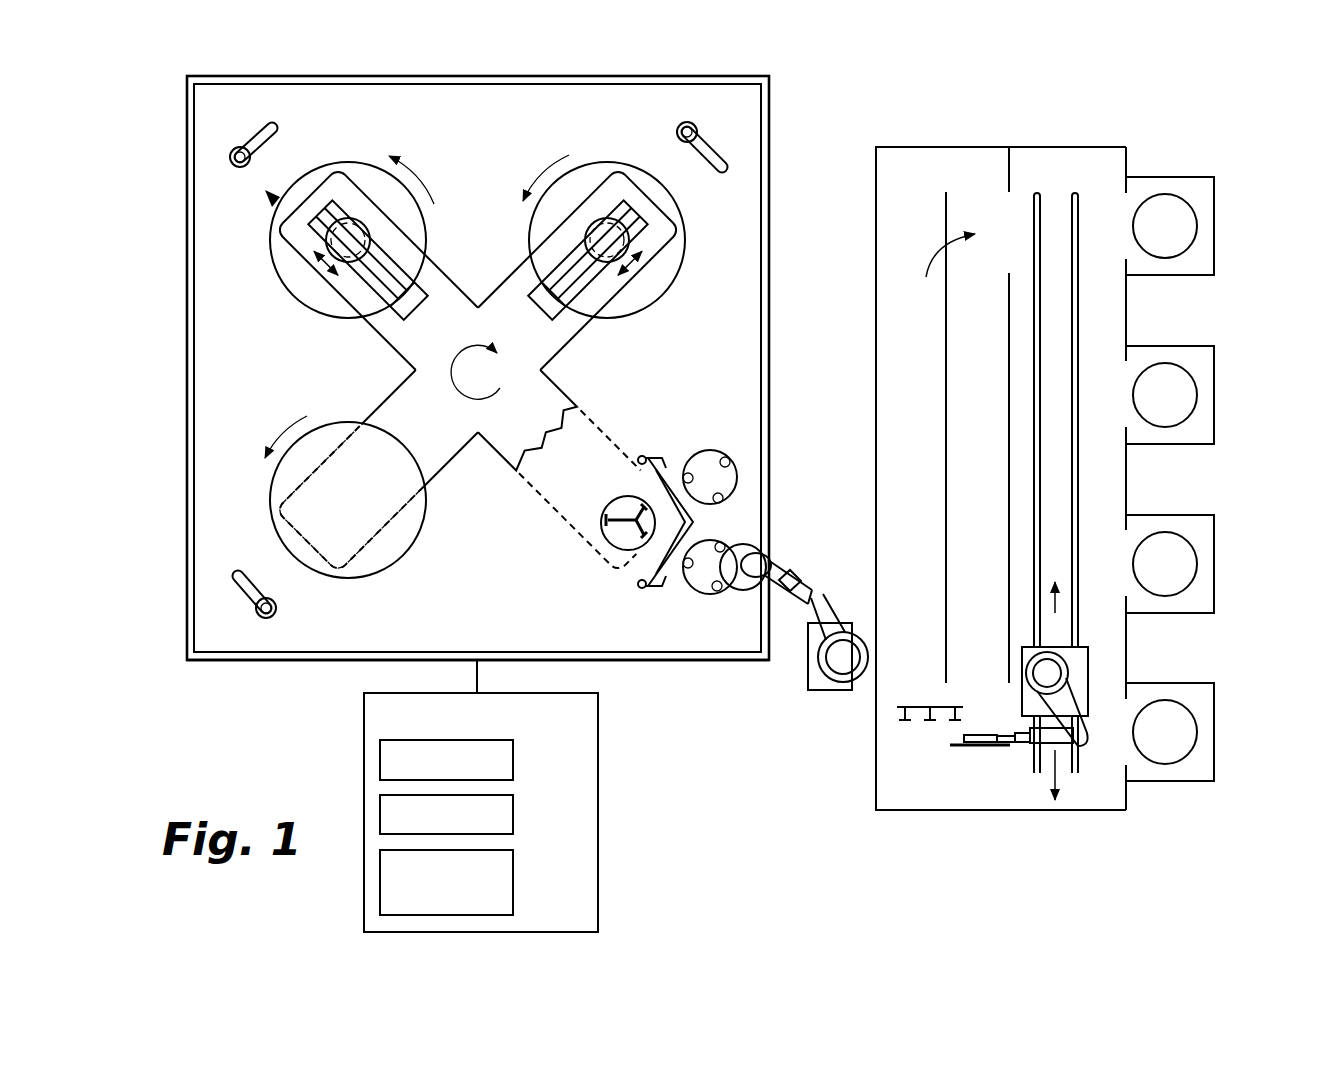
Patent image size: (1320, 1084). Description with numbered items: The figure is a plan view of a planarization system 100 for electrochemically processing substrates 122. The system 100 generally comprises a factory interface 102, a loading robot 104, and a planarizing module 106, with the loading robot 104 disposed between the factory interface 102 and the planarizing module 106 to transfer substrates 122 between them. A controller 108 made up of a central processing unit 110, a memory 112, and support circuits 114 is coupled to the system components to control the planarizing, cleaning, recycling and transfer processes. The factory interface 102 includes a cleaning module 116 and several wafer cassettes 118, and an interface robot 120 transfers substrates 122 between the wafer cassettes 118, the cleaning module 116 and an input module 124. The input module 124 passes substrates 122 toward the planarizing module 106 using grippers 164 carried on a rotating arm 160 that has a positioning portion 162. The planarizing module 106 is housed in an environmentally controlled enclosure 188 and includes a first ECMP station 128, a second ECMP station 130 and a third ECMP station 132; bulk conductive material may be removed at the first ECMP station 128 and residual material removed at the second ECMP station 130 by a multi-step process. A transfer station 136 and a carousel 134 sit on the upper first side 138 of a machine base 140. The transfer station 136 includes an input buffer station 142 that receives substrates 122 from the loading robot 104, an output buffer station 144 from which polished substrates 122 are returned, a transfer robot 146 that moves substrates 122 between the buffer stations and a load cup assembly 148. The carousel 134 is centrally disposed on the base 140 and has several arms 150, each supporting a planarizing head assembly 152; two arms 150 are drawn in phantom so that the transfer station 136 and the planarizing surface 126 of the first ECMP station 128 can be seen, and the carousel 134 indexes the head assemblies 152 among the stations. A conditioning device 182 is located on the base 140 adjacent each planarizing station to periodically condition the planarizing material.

The planarization system 100 is at (240, 728).
The factory interface 102 is at (843, 800).
The loading robot 104 is at (818, 692).
The planarizing module 106 is at (227, 655).
The controller 108 is at (598, 829).
The central processing unit (CPU) 110 is at (513, 760).
The memory 112 is at (513, 815).
The support circuits 114 is at (513, 880).
The cleaning module 116 is at (903, 312).
The wafer cassettes 118 is at (1218, 254).
The interface robot 120 is at (1086, 668).
The substrates 122 is at (1185, 226).
The input module 124 is at (915, 703).
The planarizing surface 126 is at (375, 560).
The first ECMP station 128 is at (420, 530).
The second ECMP station 130 is at (296, 302).
The third ECMP station 132 is at (664, 302).
The carousel 134 is at (521, 328).
The transfer station 136 is at (528, 600).
The first side 138 is at (192, 620).
The machine base 140 is at (195, 410).
The input buffer station 142 is at (705, 580).
The output buffer station 144 is at (705, 455).
The transfer robot 146 is at (690, 520).
The load cup assembly 148 is at (616, 542).
The arms 150 is at (386, 326).
The planarizing head assembly 152 is at (352, 243).
The rotating arm 160 is at (812, 646).
The positioning portion 162 is at (786, 573).
The grippers 164 is at (746, 548).
The conditioning device 182 is at (263, 125).
The environmentally controlled enclosure 188 is at (188, 362).